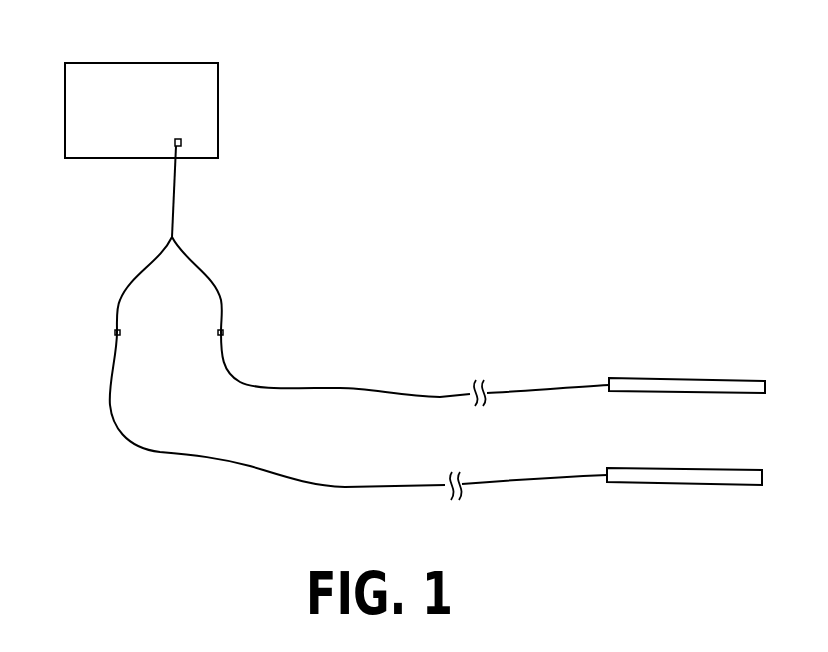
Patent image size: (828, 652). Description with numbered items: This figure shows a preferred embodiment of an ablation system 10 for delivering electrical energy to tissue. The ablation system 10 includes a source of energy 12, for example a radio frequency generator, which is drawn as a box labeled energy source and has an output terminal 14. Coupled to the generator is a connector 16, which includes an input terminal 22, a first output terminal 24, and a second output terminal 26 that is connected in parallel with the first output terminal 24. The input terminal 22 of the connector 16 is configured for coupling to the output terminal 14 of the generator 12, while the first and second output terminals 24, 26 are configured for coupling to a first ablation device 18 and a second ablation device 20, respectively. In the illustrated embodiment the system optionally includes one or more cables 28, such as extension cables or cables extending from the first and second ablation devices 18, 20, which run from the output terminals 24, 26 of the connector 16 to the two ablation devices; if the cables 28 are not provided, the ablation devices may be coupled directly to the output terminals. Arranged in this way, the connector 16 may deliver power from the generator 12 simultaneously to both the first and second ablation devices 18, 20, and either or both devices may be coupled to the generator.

The ablation system 10 is at (416, 35).
The source of energy 12 is at (218, 78).
The output terminal 14 is at (179, 140).
The connector 16 is at (131, 278).
The first ablation device 18 is at (687, 378).
The second ablation device 20 is at (675, 482).
The input terminal 22 is at (181, 146).
The first output terminal 24 is at (115, 333).
The second output terminal 26 is at (223, 333).
The cables 28 is at (520, 391).